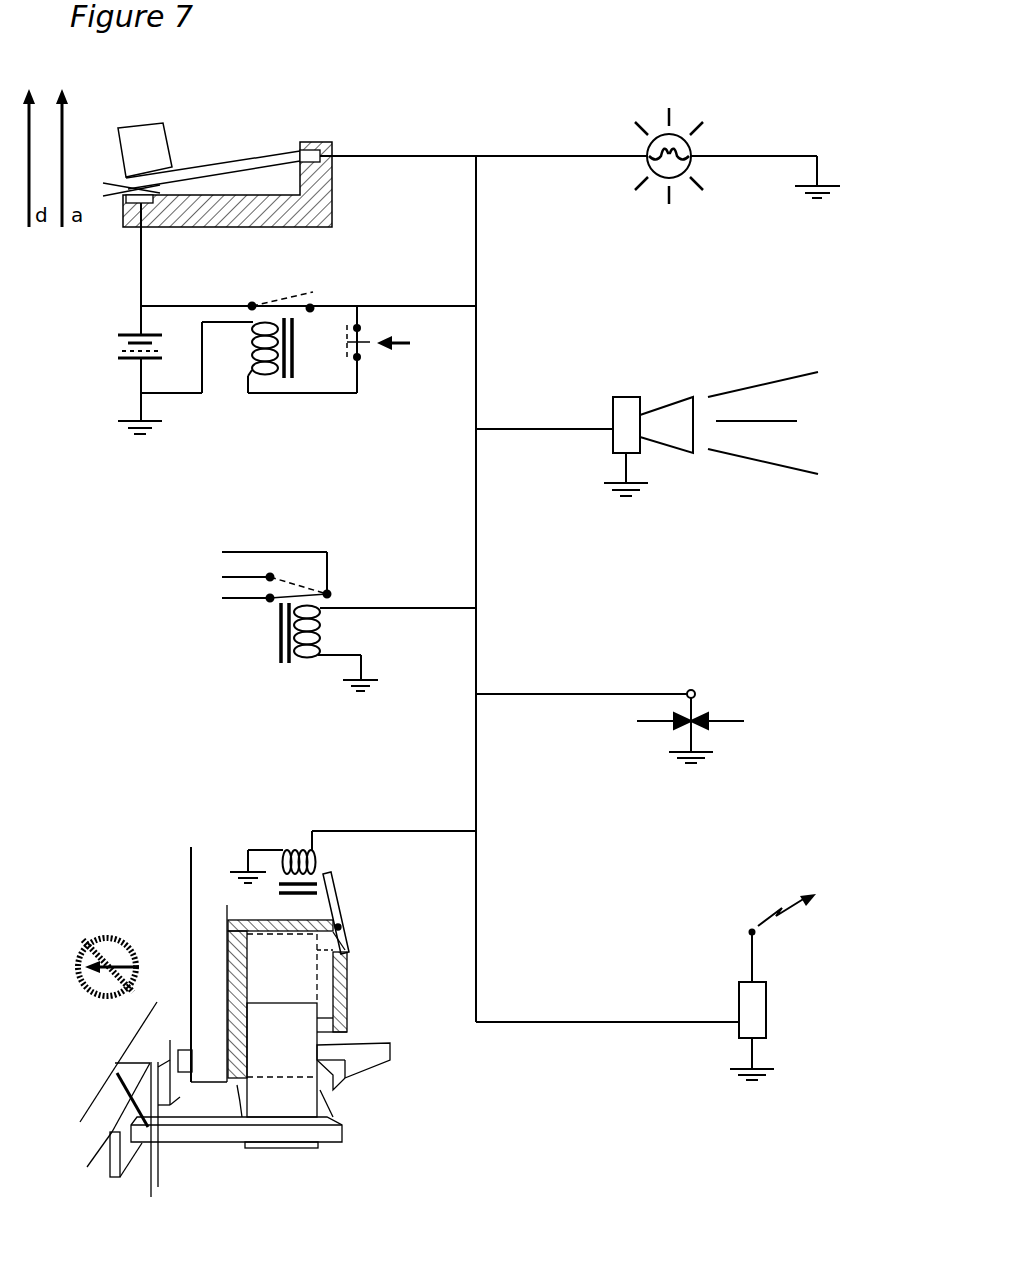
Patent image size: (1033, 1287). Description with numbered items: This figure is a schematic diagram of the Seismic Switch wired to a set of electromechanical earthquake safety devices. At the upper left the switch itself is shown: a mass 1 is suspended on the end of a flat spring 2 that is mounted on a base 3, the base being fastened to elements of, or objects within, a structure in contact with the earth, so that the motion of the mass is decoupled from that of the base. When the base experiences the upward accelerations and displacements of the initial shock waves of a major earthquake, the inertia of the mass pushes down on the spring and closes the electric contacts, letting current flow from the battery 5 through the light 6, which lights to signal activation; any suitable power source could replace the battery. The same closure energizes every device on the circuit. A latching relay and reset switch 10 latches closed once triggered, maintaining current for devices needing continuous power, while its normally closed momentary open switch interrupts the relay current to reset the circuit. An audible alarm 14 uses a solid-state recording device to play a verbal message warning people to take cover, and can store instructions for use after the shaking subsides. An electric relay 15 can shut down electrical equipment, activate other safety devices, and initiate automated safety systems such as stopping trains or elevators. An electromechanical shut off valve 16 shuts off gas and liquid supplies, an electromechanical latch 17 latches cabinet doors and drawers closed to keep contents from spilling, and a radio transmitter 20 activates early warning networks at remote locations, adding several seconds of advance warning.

The mass 1 is at (117, 127).
The flat spring 2 is at (209, 150).
The base 3 is at (318, 142).
The battery 5 is at (130, 370).
The light 6 is at (723, 154).
The latching relay and reset switch 10 is at (275, 342).
The audible alarm 14 is at (665, 430).
The electric relay 15 is at (334, 604).
The electromechanical shut off valve 16 is at (610, 721).
The electromechanical latch 17 is at (277, 999).
The radio transmitter 20 is at (646, 987).